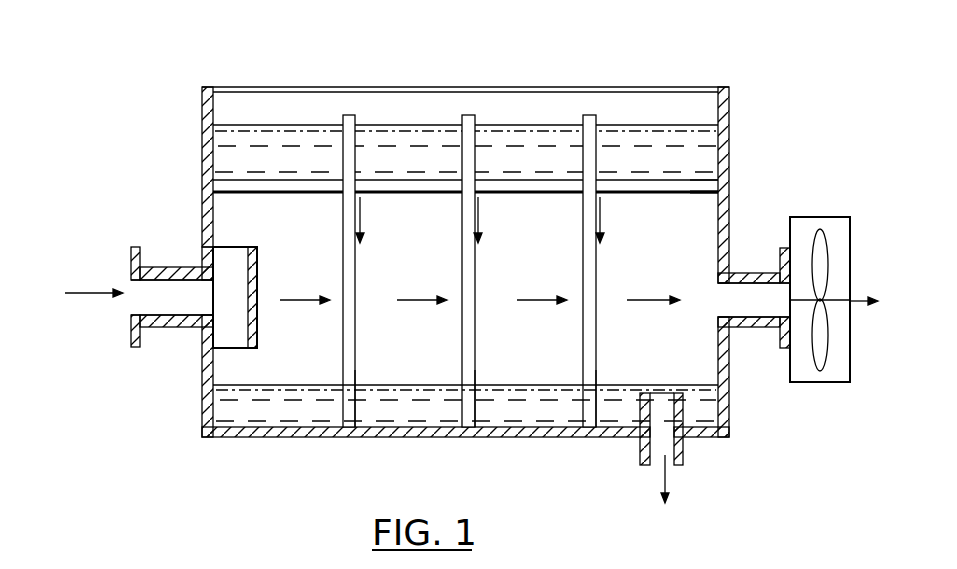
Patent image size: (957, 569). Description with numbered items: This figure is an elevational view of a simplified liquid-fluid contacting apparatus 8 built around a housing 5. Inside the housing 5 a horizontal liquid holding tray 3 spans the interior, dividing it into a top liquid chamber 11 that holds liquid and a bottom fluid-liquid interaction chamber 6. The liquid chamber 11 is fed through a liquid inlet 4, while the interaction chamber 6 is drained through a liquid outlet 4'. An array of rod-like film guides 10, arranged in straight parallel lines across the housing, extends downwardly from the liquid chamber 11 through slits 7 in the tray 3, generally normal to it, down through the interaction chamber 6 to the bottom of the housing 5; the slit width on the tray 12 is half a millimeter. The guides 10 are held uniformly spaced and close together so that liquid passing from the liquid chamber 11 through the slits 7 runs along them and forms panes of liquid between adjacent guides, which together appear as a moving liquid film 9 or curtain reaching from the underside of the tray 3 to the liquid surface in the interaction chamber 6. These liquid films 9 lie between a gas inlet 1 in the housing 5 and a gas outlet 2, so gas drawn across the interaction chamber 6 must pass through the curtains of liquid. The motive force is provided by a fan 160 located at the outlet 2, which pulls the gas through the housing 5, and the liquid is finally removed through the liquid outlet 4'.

The gas inlet 1 is at (117, 306).
The gas outlet 2 is at (752, 327).
The liquid holding tray 3 is at (697, 185).
The liquid inlet 4 is at (465, 106).
The liquid outlet 4' is at (643, 460).
The housing 5 is at (200, 163).
The fluid-liquid interaction chamber 6 is at (313, 337).
The slits 7 is at (358, 178).
The liquid-fluid contacting apparatus 8 is at (419, 222).
The liquid film 9 is at (362, 258).
The film guides 10 is at (358, 362).
The liquid chamber 11 is at (370, 110).
The tray 12 is at (546, 170).
The fan 160 is at (826, 360).